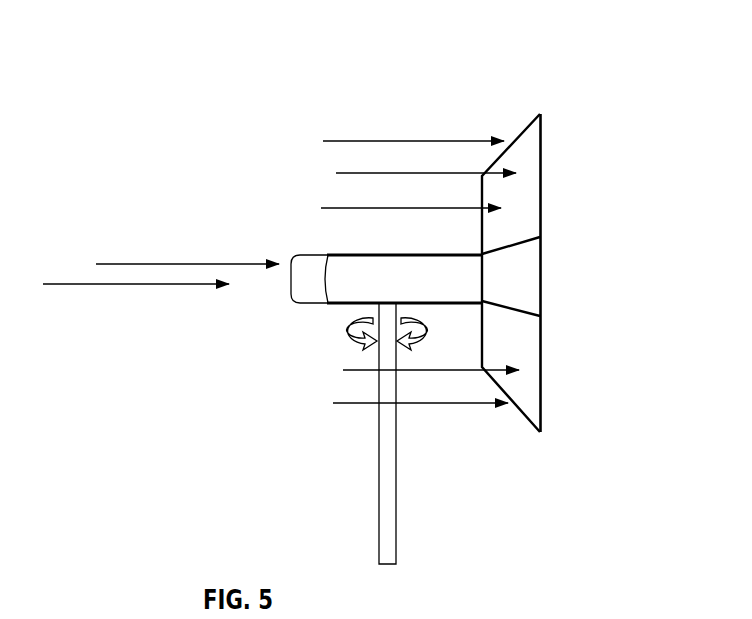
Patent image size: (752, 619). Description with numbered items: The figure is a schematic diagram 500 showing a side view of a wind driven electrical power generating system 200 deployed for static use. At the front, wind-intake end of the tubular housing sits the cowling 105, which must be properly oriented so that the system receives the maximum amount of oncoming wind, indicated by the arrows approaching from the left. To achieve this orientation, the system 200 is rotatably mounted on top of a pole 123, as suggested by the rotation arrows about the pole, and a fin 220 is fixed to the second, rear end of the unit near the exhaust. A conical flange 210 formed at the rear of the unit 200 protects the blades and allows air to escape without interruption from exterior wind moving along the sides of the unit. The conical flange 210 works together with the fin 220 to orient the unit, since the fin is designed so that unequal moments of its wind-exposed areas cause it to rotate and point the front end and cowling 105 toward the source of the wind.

The schematic diagram 500 is at (527, 80).
The fin 220 is at (541, 197).
The conical flange 210 is at (528, 271).
The wind driven electrical power generating system 200 is at (404, 279).
The cowling 105 is at (293, 253).
The pole 123 is at (396, 523).